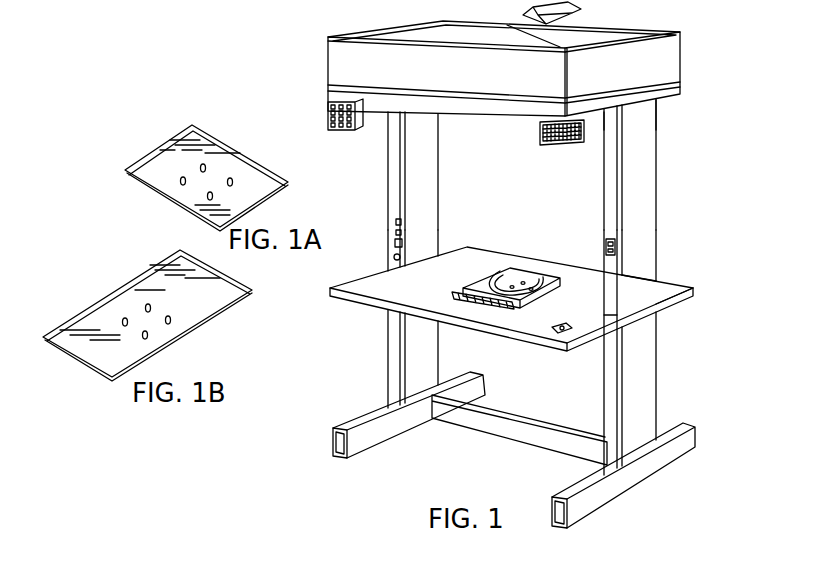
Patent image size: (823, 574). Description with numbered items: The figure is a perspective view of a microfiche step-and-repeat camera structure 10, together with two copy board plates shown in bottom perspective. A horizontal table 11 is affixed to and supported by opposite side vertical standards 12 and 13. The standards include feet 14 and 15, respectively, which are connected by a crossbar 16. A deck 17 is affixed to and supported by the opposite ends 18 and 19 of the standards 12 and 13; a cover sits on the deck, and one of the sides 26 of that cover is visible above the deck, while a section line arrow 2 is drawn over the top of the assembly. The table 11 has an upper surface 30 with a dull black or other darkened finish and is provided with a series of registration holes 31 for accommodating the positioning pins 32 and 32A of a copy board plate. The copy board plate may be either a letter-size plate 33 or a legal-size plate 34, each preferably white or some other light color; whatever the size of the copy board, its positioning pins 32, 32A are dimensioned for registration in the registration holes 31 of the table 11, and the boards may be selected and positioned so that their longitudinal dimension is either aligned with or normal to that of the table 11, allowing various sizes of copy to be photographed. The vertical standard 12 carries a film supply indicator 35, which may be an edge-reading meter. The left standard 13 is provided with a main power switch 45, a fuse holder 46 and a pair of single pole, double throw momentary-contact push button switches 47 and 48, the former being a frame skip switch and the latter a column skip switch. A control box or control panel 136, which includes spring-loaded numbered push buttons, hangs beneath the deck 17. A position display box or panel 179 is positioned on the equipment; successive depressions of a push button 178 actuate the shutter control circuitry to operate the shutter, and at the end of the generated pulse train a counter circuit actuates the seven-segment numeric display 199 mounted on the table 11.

In FIG. 1, the section line arrow 2 is at (548, 12).
In FIG. 1, the microfiche step-and-repeat camera structure 10 is at (650, 149).
In FIG. 1, the horizontal table 11 is at (672, 288).
In FIG. 1, the vertical standard 12 is at (643, 383).
In FIG. 1, the vertical standard 13 is at (393, 332).
In FIG. 1, the foot 14 is at (605, 492).
In FIG. 1, the foot 15 is at (358, 437).
In FIG. 1, the crossbar 16 is at (497, 425).
In FIG. 1, the deck 17 is at (662, 96).
In FIG. 1, the end of standard 18 is at (633, 118).
In FIG. 1, the end of standard 19 is at (393, 118).
In FIG. 1, the side of cover 26 is at (658, 72).
In FIG. 1, the upper surface 30 is at (376, 287).
In FIG. 1, the registration holes 31 is at (520, 287).
In FIG. 1A, the positioning pins 32 is at (180, 181).
In FIG. 1B, the positioning pins 32A is at (170, 320).
In FIG. 1, the copy board plate 33 is at (543, 279).
In FIG. 1A, the copy board plate 33 is at (238, 172).
In FIG. 1B, the copy board plate 34 is at (86, 345).
In FIG. 1, the film supply indicator 35 is at (616, 250).
In FIG. 1, the main power switch 45 is at (390, 259).
In FIG. 1, the fuse holder 46 is at (399, 244).
In FIG. 1, the frame skip switch 47 is at (399, 222).
In FIG. 1, the column skip switch 48 is at (392, 233).
In FIG. 1, the control box 136 is at (346, 132).
In FIG. 1, the push button 178 is at (568, 345).
In FIG. 1, the position display box 179 is at (552, 143).
In FIG. 1, the seven-segment numeric display 199 is at (487, 306).